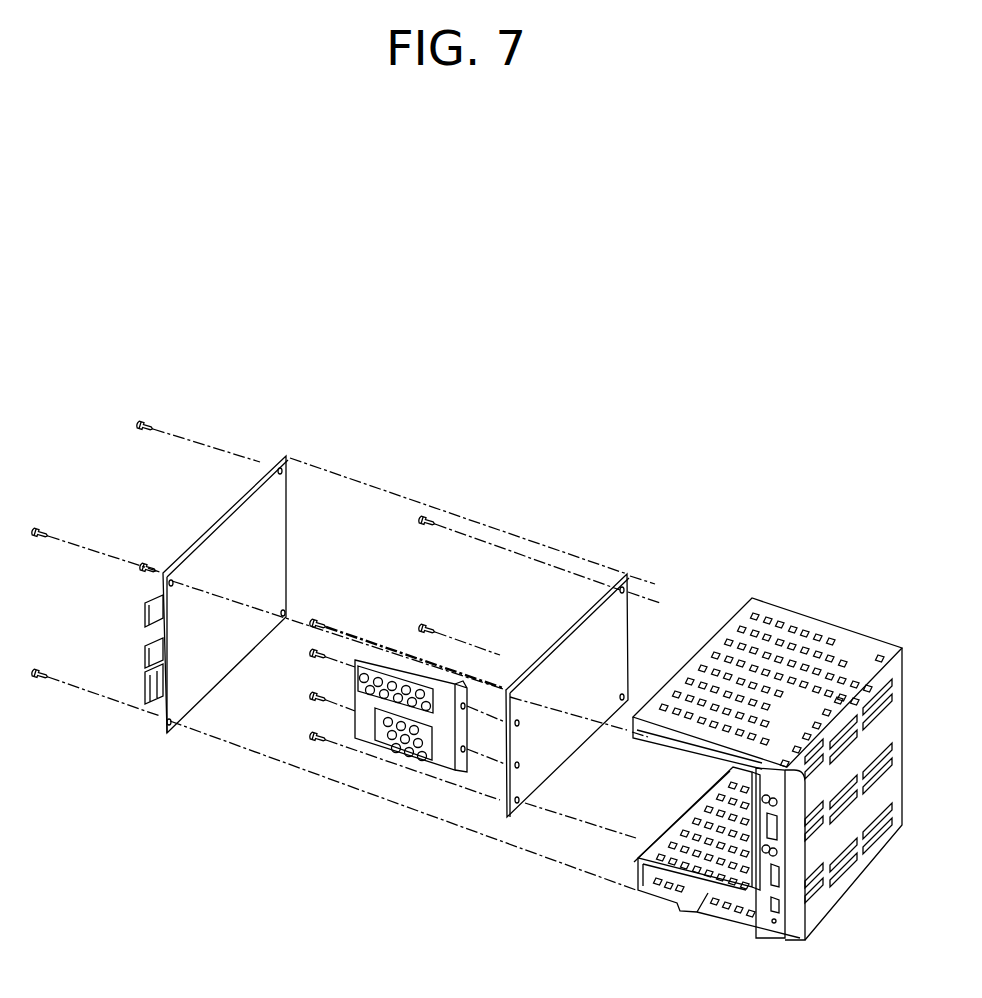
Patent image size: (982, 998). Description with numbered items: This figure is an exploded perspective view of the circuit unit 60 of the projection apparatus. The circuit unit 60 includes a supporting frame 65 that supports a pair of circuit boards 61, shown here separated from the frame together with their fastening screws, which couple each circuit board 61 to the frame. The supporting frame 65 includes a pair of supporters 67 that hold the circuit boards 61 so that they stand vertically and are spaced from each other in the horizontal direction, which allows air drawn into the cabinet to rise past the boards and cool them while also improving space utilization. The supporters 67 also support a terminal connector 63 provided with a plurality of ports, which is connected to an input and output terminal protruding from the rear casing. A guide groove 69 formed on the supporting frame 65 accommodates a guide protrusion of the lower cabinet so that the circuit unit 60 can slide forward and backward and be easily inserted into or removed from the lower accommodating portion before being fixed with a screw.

The circuit unit 60 is at (347, 362).
The circuit board 61 is at (208, 687).
The terminal connector 63 is at (427, 768).
The supporting frame 65 is at (847, 626).
The supporter 67 is at (638, 878).
The guide groove 69 is at (687, 898).